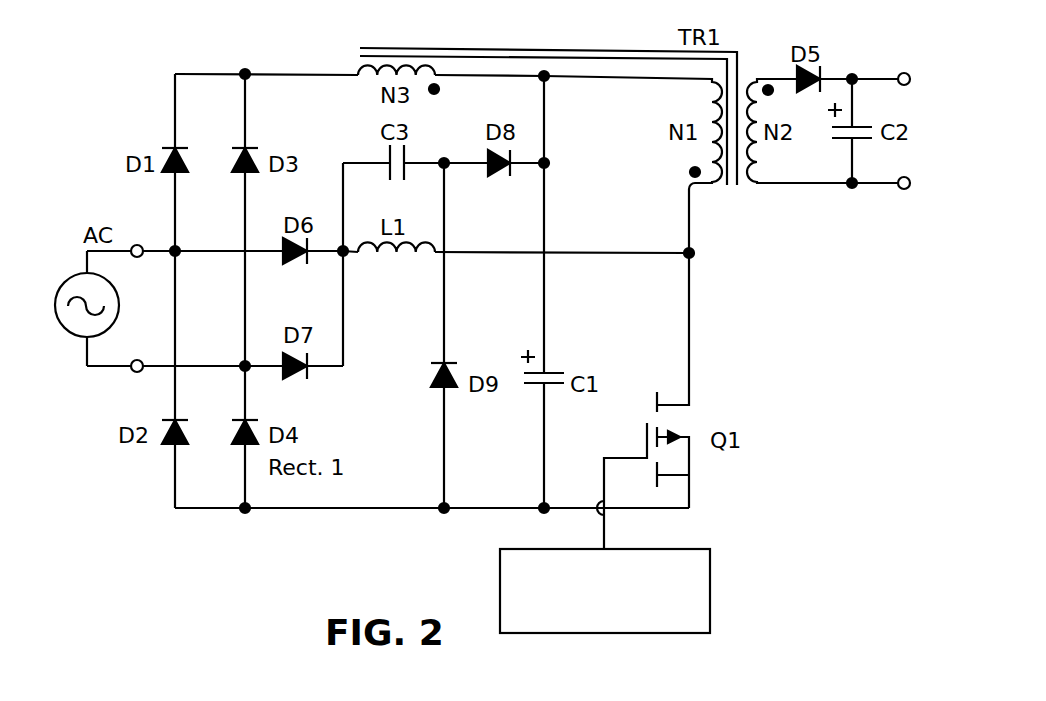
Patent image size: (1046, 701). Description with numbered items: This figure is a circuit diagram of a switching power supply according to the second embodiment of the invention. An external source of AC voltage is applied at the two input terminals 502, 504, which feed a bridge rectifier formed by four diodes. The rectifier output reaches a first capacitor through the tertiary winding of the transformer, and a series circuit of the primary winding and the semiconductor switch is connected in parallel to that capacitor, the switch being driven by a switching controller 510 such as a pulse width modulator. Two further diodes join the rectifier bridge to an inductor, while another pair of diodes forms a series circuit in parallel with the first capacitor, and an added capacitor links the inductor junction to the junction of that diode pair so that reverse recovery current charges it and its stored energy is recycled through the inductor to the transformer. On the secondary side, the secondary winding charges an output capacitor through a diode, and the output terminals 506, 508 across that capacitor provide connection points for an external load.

The input terminal 502 is at (134, 246).
The input terminal 504 is at (133, 371).
The output terminal 506 is at (904, 73).
The output terminal 508 is at (905, 189).
The switching controller 510 is at (713, 588).